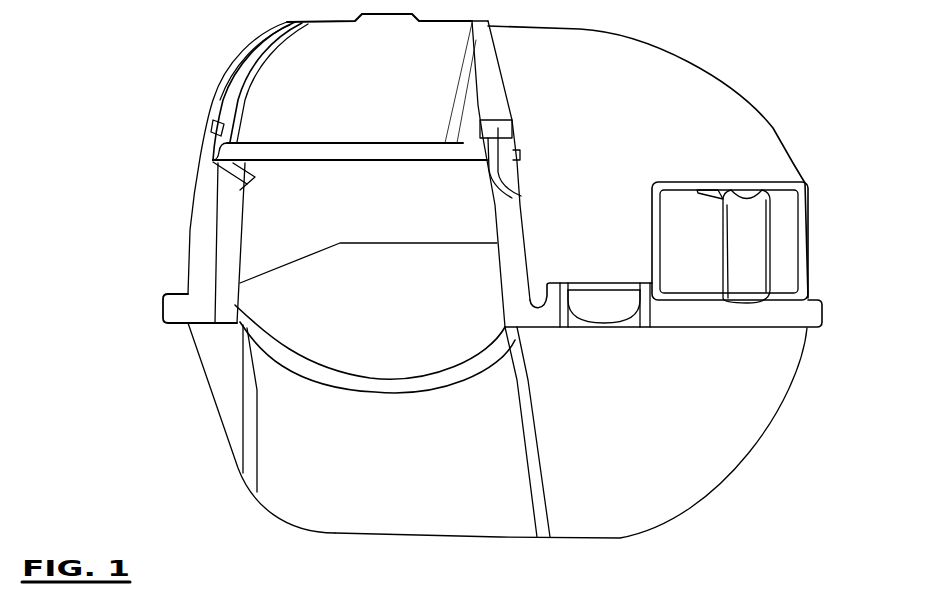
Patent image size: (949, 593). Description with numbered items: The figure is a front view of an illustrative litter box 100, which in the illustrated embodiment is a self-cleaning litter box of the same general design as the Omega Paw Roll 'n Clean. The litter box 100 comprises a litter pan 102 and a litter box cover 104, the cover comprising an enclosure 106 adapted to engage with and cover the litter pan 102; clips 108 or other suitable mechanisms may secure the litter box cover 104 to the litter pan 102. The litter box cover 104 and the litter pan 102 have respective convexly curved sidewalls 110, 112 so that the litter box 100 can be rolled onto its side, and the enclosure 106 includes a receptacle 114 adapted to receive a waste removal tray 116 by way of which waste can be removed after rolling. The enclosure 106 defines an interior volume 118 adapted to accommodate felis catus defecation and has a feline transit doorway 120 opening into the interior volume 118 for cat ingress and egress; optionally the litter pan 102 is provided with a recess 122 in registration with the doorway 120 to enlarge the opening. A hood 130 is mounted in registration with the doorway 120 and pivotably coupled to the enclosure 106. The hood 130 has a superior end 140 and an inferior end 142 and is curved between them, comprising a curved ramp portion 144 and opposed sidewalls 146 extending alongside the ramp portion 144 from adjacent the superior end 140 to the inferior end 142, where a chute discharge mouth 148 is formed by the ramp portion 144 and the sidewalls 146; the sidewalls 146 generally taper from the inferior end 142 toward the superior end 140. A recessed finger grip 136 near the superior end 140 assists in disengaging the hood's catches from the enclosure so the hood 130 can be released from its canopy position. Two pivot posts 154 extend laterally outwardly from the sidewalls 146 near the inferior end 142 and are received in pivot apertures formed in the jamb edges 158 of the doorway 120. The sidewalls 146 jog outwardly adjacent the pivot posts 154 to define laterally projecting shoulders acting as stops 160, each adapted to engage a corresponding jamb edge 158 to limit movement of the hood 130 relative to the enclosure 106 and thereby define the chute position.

The litter box 100 is at (472, 276).
The litter pan 102 is at (212, 430).
The litter box cover 104 is at (176, 240).
The enclosure 106 is at (198, 183).
The clips 108 is at (603, 307).
The convexly curved sidewall 110 is at (773, 128).
The convexly curved sidewall 112 is at (787, 397).
The receptacle 114 is at (637, 207).
The waste removal tray 116 is at (780, 263).
The interior volume 118 is at (402, 211).
The feline transit doorway 120 is at (236, 262).
The recess 122 is at (388, 366).
The hood 130 is at (233, 58).
The recessed finger grip 136 is at (377, 22).
The superior end 140 is at (443, 33).
The inferior end 142 is at (443, 152).
The curved ramp portion 144 is at (307, 103).
The sidewalls 146 is at (263, 170).
The chute discharge mouth 148 is at (426, 180).
The pivot posts 154 is at (521, 156).
The jamb edges 158 is at (218, 312).
The stops 160 is at (218, 122).